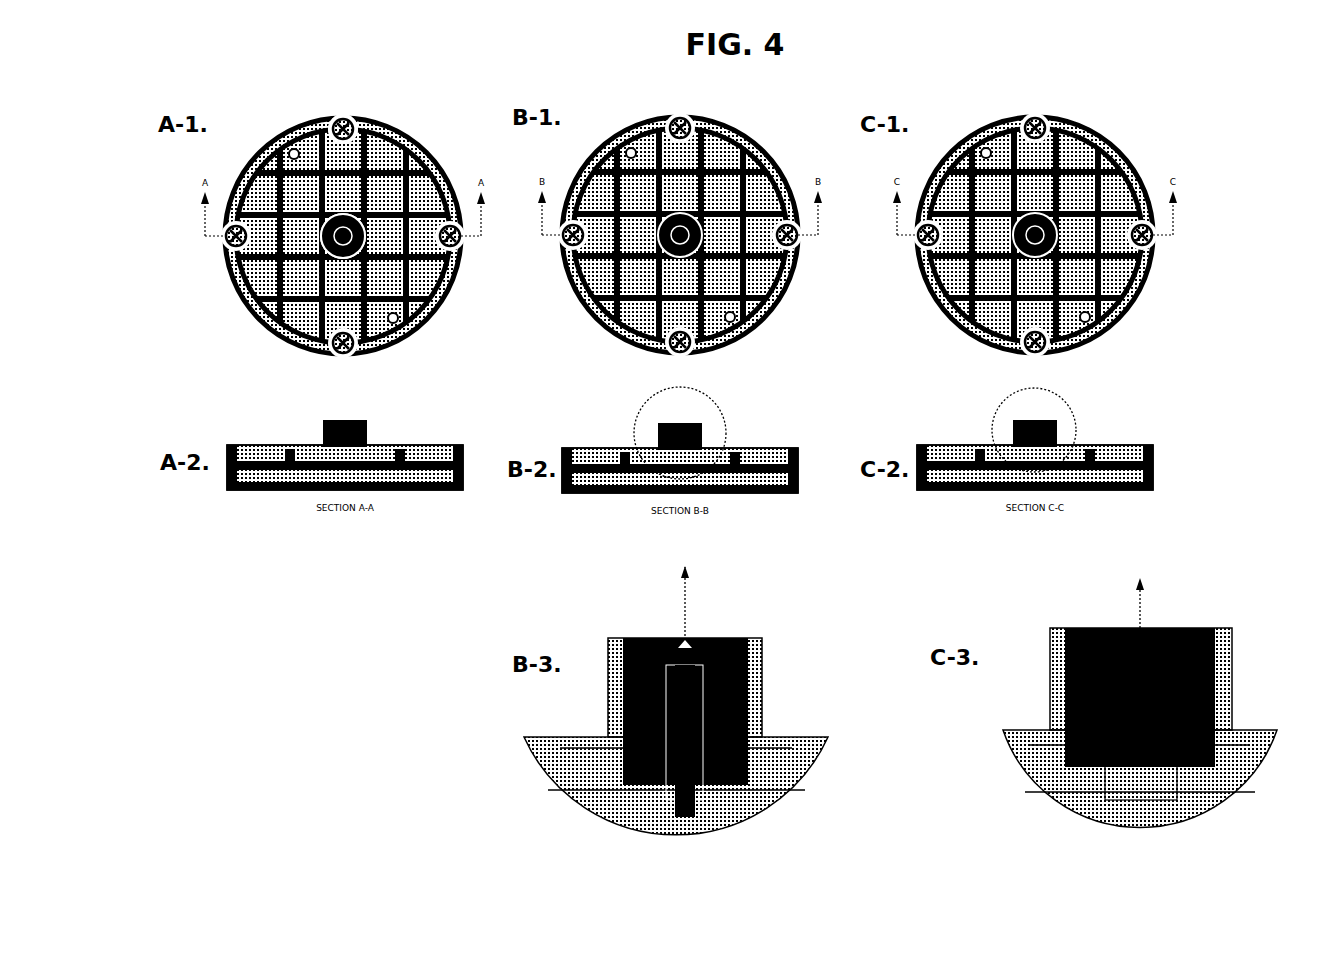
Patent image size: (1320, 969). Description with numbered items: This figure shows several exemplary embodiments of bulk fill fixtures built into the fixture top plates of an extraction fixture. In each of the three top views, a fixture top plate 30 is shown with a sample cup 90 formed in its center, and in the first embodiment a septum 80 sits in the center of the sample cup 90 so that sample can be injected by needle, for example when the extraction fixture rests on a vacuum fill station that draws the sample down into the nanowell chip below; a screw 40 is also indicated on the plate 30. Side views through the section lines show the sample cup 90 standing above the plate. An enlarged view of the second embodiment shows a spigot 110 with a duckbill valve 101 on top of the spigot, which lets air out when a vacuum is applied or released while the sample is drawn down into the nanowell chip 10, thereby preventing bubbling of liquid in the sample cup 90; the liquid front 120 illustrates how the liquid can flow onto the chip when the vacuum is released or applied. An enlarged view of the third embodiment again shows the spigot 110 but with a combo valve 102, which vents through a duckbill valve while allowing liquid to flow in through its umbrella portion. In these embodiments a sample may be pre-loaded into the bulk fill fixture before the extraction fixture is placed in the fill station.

The nanowell chip 10 is at (687, 830).
The fixture top plate 30 is at (611, 122).
The screw 40 is at (331, 118).
The septum 80 is at (330, 252).
The sample cup 90 is at (356, 250).
The duckbill valve 101 is at (690, 648).
The combo valve 102 is at (1197, 812).
The spigot 110 is at (1128, 715).
The liquid front 120 is at (628, 832).